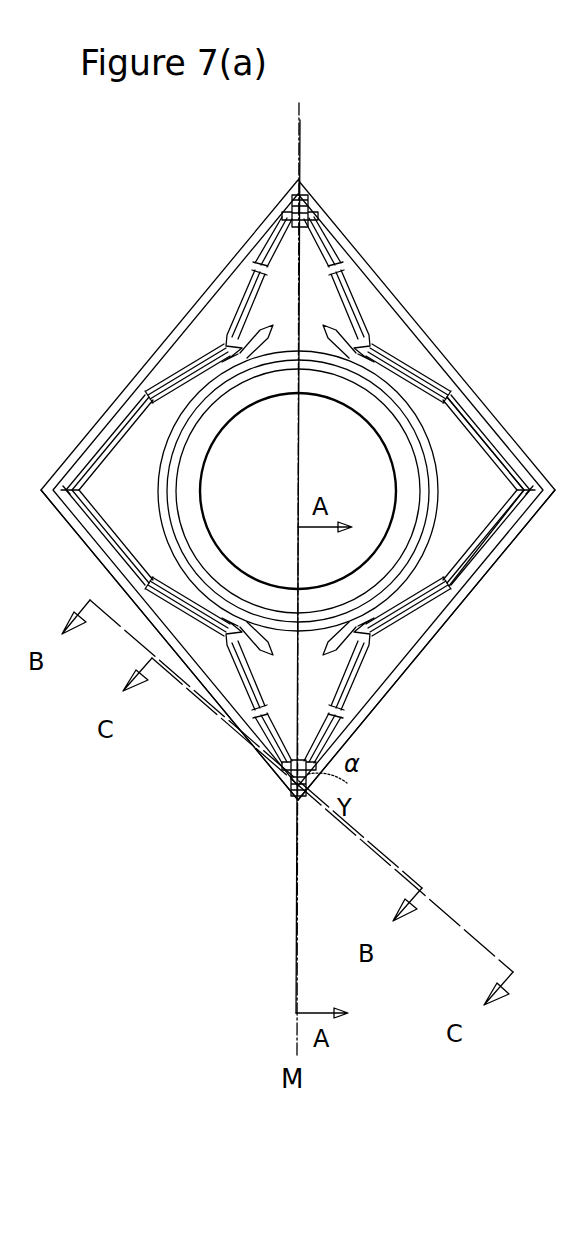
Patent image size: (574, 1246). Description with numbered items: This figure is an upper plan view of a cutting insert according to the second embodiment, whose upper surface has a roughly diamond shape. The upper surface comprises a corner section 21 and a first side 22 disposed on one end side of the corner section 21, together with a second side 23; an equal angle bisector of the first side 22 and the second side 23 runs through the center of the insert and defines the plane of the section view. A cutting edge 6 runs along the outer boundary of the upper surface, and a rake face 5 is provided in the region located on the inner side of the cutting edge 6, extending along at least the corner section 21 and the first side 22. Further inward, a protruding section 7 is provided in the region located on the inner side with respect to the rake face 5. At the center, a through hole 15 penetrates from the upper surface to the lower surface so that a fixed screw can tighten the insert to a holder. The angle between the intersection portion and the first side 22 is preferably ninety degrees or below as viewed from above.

The through hole 15 is at (338, 480).
The first side 22 is at (460, 610).
The second side 23 is at (137, 608).
The rake face 5 is at (378, 662).
The cutting edge 6 is at (360, 735).
The protruding section 7 is at (286, 725).
The corner section 21 is at (296, 808).